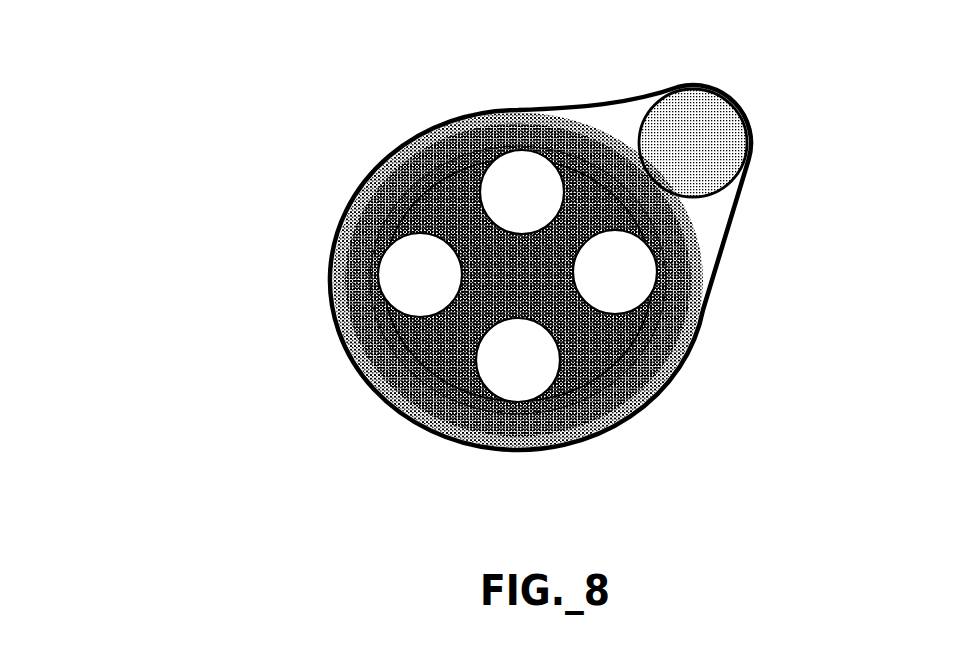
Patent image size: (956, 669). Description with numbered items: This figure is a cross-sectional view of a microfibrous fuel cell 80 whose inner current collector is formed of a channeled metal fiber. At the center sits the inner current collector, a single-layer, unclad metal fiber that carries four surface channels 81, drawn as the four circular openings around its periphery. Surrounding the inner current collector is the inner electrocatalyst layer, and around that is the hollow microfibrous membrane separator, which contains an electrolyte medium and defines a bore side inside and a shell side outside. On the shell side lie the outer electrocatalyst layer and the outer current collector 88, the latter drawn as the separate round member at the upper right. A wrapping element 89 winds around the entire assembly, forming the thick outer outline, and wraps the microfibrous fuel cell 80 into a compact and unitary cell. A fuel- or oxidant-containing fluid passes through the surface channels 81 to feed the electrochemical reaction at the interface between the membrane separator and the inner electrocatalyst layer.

The microfibrous fuel cell 80 is at (268, 146).
The surface channels 81 is at (412, 282).
The outer current collector 88 is at (697, 133).
The wrapping element 89 is at (612, 104).